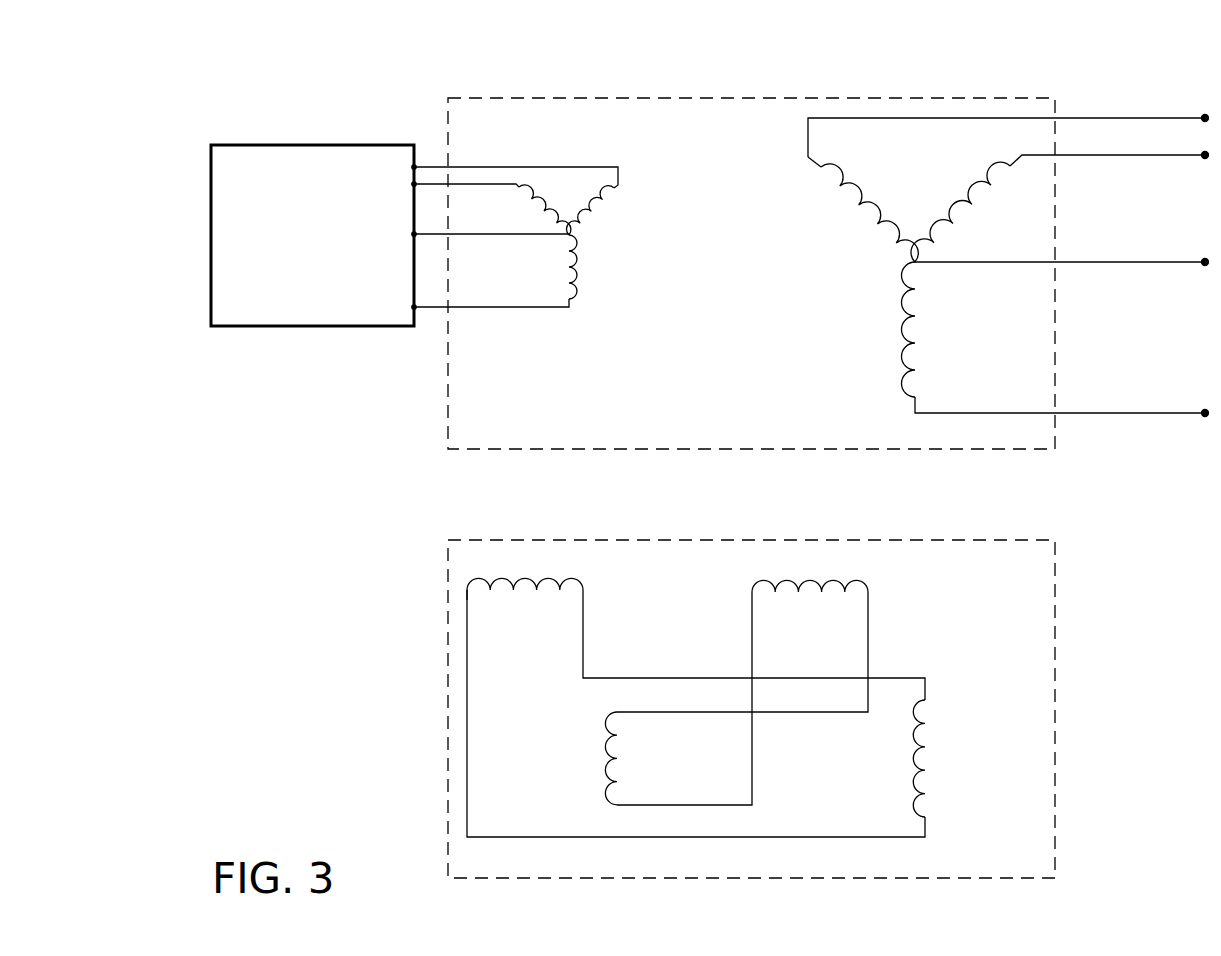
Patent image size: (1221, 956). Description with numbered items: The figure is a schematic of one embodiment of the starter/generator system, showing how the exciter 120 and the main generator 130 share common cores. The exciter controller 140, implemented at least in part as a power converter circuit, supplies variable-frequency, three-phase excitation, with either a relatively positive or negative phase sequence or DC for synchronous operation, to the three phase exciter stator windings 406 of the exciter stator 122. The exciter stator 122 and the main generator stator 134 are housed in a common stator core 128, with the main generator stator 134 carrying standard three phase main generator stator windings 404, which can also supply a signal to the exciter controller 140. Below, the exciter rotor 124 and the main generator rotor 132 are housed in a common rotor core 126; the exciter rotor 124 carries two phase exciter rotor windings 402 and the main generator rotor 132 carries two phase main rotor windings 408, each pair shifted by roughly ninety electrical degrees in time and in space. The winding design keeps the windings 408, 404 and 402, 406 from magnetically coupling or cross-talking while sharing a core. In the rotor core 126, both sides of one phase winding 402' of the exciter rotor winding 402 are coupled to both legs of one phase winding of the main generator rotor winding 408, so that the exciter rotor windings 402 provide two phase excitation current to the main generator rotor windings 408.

The exciter 120 is at (528, 165).
The exciter stator 122 is at (608, 215).
The exciter rotor 124 is at (691, 649).
The common rotor core 126 is at (699, 533).
The common stator core 128 is at (700, 91).
The main generator 130 is at (1000, 219).
The main generator rotor 132 is at (891, 525).
The main generator stator 134 is at (905, 265).
The exciter controller 140 is at (277, 145).
The exciter rotor windings 402 is at (539, 691).
The phase winding 402' is at (422, 597).
The main generator stator windings 404 is at (869, 158).
The exciter stator windings 406 is at (601, 194).
The main rotor windings 408 is at (882, 593).